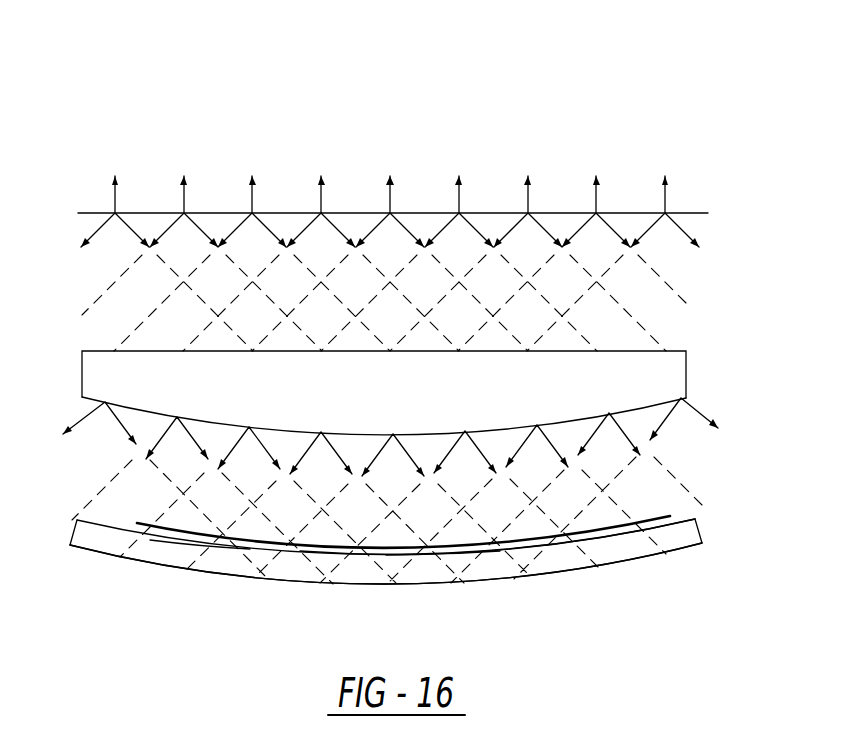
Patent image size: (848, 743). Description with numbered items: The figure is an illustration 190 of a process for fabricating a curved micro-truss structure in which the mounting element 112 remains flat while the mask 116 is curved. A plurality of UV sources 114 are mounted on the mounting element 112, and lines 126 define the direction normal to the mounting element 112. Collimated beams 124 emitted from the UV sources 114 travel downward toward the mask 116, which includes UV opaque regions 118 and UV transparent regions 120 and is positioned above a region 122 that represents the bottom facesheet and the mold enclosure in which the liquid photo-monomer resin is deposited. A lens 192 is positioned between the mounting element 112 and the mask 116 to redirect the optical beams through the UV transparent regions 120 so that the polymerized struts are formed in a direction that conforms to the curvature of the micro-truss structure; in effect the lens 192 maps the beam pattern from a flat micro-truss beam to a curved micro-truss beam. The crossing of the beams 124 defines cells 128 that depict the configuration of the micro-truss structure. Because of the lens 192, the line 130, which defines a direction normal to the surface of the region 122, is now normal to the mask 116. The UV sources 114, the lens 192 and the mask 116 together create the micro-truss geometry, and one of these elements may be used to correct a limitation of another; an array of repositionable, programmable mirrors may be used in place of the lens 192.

The illustration 190 is at (641, 100).
The mounting element 112 is at (488, 212).
The UV sources 114 is at (322, 212).
The lines 126 is at (390, 212).
The lens 192 is at (688, 375).
The collimated beams 124 is at (150, 474).
The mask 116 is at (673, 513).
The UV opaque regions 118 is at (310, 548).
The region 122 is at (600, 567).
The UV transparent regions 120 is at (457, 547).
The cells 128 is at (427, 527).
The line 130 is at (202, 513).